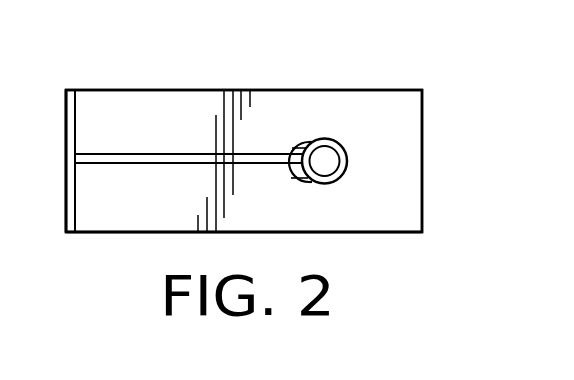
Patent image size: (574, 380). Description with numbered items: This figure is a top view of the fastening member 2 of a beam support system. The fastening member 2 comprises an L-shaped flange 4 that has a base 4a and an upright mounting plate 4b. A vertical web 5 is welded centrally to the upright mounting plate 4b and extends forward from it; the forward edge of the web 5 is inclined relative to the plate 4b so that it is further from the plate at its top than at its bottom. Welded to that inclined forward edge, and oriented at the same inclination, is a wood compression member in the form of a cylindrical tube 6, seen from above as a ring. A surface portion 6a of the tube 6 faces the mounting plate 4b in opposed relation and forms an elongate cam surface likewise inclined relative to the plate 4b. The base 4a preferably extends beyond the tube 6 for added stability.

The fastening member 2 is at (331, 63).
The L-shaped flange 4 is at (155, 220).
The base 4a is at (348, 233).
The upright mounting plate 4b is at (76, 122).
The vertical web 5 is at (200, 154).
The cylindrical tube 6 is at (325, 163).
The surface portion 6a is at (289, 143).